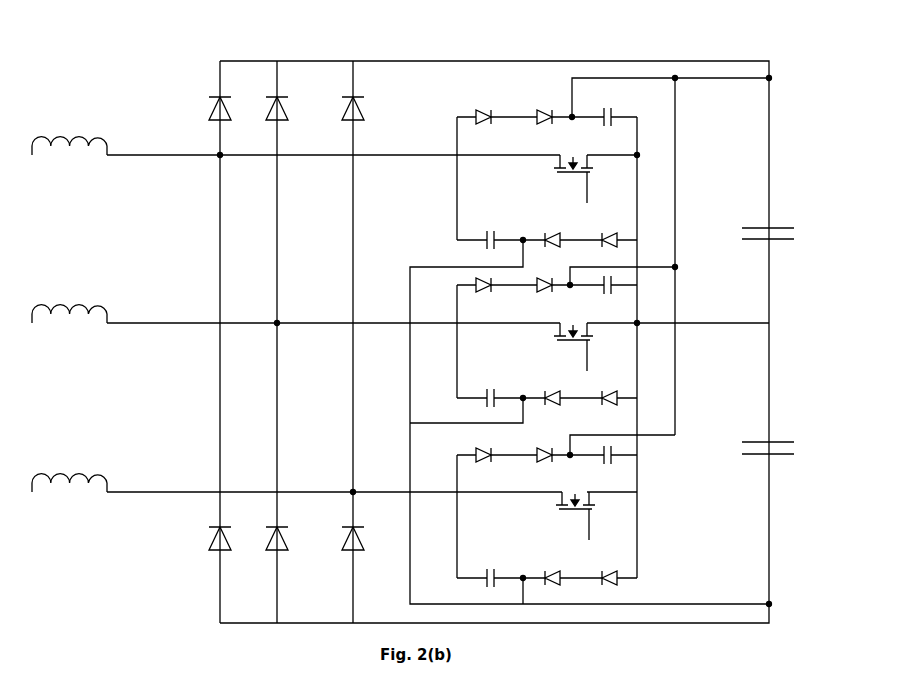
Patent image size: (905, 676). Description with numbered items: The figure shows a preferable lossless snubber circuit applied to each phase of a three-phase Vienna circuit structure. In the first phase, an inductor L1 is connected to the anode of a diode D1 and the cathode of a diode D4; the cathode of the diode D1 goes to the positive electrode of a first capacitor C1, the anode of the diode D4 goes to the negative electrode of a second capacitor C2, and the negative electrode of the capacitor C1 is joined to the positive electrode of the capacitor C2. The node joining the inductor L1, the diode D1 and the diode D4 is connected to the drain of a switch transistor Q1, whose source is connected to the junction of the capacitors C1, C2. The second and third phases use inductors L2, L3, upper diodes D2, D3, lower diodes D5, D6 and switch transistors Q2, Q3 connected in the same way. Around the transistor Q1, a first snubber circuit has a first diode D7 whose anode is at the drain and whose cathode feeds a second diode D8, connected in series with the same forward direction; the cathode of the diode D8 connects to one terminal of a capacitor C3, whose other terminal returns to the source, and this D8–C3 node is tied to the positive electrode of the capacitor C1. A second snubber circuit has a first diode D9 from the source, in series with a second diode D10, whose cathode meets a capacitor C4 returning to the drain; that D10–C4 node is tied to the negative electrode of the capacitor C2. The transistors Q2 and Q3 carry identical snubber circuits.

The inductor L1 is at (69, 135).
The inductor L2 is at (69, 303).
The inductor L3 is at (69, 472).
The diode D1 is at (234, 108).
The diode D2 is at (290, 108).
The diode D3 is at (366, 108).
The diode D4 is at (234, 538).
The diode D5 is at (290, 538).
The diode D6 is at (366, 538).
The first diode in the first snubber circuit D7 is at (488, 128).
The second diode in the first snubber circuit D8 is at (550, 128).
The first diode in the second snubber circuit D9 is at (607, 227).
The second diode in the second snubber circuit D10 is at (550, 227).
The first capacitor C1 is at (779, 232).
The second capacitor C2 is at (779, 447).
The capacitor in the first snubber circuit C3 is at (606, 105).
The capacitor in the second snubber circuit C4 is at (487, 228).
The switch transistor Q1 is at (573, 179).
The switch transistor Q2 is at (573, 347).
The switch transistor Q3 is at (575, 516).